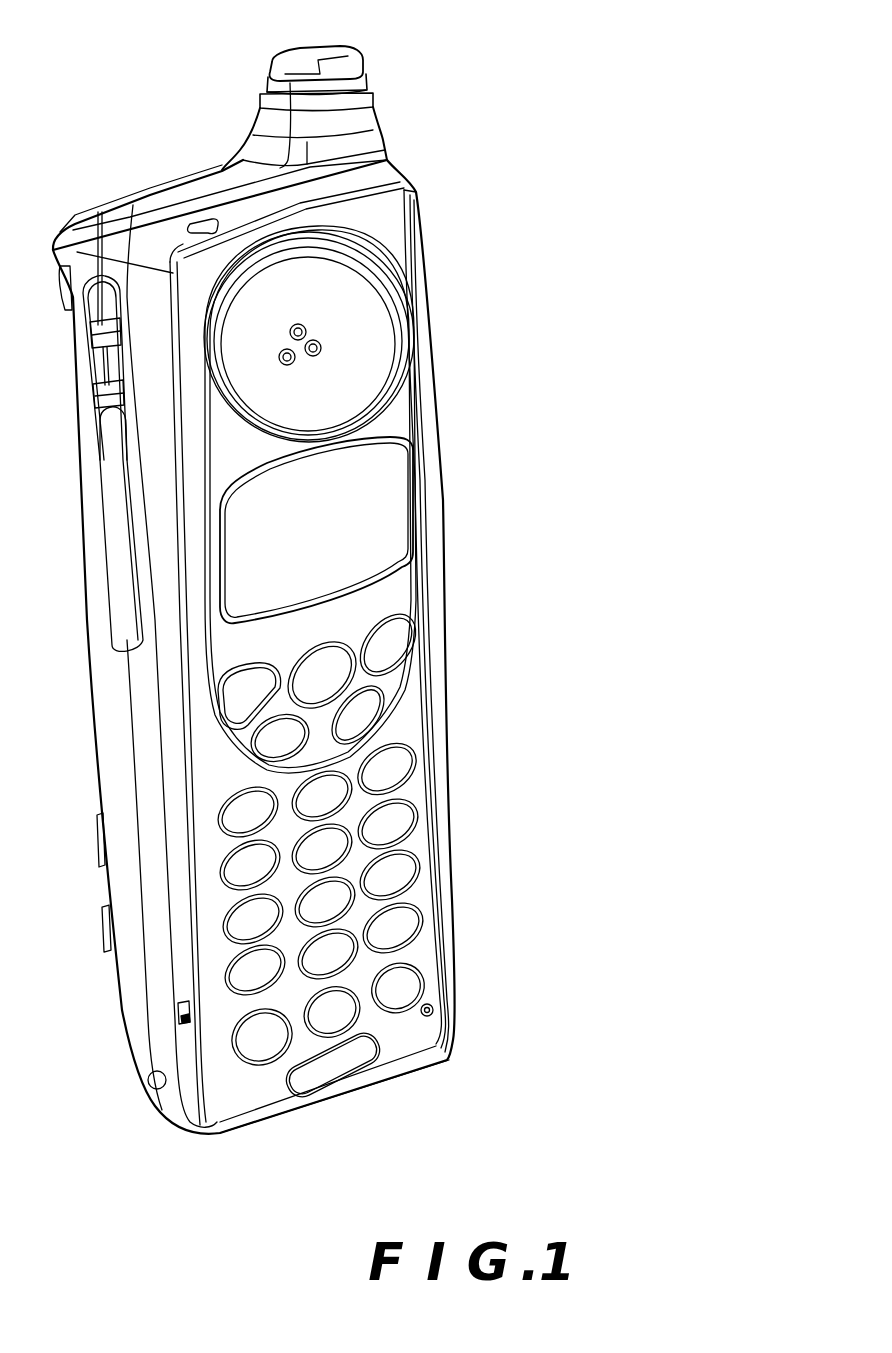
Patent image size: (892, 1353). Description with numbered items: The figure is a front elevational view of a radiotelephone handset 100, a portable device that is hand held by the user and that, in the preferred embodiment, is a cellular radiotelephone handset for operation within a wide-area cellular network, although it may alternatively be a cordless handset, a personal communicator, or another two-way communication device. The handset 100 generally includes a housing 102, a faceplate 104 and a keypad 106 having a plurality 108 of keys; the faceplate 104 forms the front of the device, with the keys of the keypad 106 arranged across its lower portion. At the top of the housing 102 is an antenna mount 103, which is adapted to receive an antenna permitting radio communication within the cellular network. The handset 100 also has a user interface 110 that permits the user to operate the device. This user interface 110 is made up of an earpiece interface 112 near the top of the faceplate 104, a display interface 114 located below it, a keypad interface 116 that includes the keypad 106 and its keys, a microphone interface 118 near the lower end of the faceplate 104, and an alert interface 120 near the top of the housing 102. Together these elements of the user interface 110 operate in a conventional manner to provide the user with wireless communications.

The radiotelephone handset 100 is at (254, 642).
The housing 102 is at (418, 190).
The antenna mount 103 is at (355, 53).
The faceplate 104 is at (442, 1062).
The keypad 106 is at (462, 768).
The plurality of keys 108 is at (413, 877).
The user interface 110 is at (512, 893).
The earpiece interface 112 is at (338, 332).
The display interface 114 is at (415, 485).
The keypad interface 116 is at (610, 819).
The microphone interface 118 is at (433, 1008).
The alert interface 120 is at (198, 220).